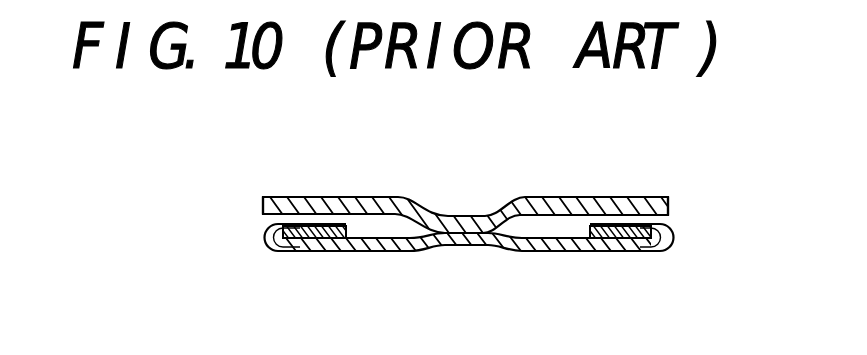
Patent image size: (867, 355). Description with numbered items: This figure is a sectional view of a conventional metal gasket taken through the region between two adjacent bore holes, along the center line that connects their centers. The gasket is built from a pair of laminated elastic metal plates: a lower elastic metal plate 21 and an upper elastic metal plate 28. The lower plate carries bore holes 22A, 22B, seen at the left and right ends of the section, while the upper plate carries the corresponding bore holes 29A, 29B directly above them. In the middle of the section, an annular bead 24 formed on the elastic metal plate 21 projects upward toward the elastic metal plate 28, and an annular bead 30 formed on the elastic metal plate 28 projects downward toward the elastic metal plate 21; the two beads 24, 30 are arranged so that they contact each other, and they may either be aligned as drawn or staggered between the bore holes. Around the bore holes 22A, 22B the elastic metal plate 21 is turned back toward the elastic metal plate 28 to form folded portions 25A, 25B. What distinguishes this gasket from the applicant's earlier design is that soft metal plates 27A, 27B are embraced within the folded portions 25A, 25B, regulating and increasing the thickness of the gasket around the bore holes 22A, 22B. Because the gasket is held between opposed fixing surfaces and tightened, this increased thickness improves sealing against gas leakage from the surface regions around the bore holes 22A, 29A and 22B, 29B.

The elastic metal plate 21 is at (538, 252).
The bore hole 22A is at (264, 236).
The bore hole 22B is at (675, 241).
The bead 24 is at (463, 246).
The folded portion 25A is at (305, 228).
The folded portion 25B is at (627, 227).
The soft metal plate 27A is at (303, 240).
The soft metal plate 27B is at (627, 240).
The elastic metal plate 28 is at (574, 210).
The bore hole 29A is at (263, 205).
The bore hole 29B is at (669, 206).
The bead 30 is at (458, 224).